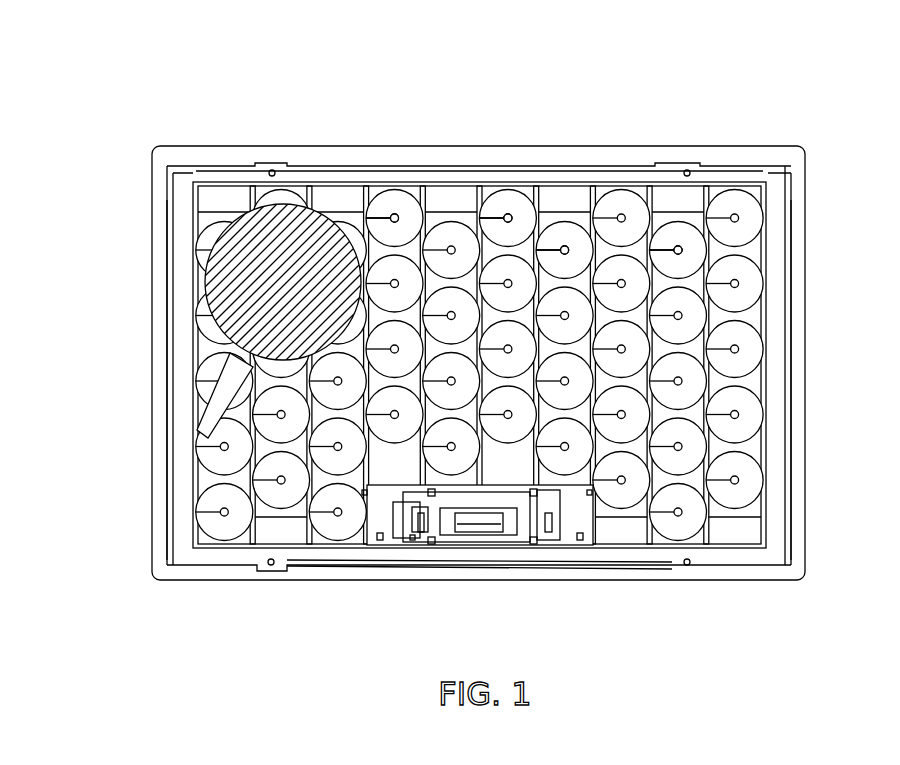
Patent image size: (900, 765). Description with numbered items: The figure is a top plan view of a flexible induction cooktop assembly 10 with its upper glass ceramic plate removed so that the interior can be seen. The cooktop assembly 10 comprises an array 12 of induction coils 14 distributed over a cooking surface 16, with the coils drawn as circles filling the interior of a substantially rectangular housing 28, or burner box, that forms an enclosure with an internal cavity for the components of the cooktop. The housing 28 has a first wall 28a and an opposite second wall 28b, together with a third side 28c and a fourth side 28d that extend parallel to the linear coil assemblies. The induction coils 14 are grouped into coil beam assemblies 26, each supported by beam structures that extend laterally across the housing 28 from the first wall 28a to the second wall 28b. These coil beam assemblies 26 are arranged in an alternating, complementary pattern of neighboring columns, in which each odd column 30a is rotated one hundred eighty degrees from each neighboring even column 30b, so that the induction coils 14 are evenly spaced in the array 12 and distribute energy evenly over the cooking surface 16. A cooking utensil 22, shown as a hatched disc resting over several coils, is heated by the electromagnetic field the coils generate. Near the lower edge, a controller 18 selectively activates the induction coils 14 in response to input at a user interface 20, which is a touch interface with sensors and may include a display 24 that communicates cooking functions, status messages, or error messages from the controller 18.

The induction cooktop assembly 10 is at (222, 120).
The array 12 is at (683, 202).
The induction coils 14 is at (747, 353).
The cooking surface 16 is at (479, 364).
The controller 18 is at (403, 541).
The user interface 20 is at (508, 533).
The cooking utensil 22 is at (205, 283).
The display 24 is at (477, 516).
The coil beam assemblies 26 is at (524, 234).
The housing 28 is at (193, 177).
The first wall 28a is at (287, 548).
The second wall 28b is at (380, 160).
The third side 28c is at (183, 383).
The fourth side 28d is at (783, 383).
The odd column 30a is at (573, 236).
The even column 30b is at (500, 205).